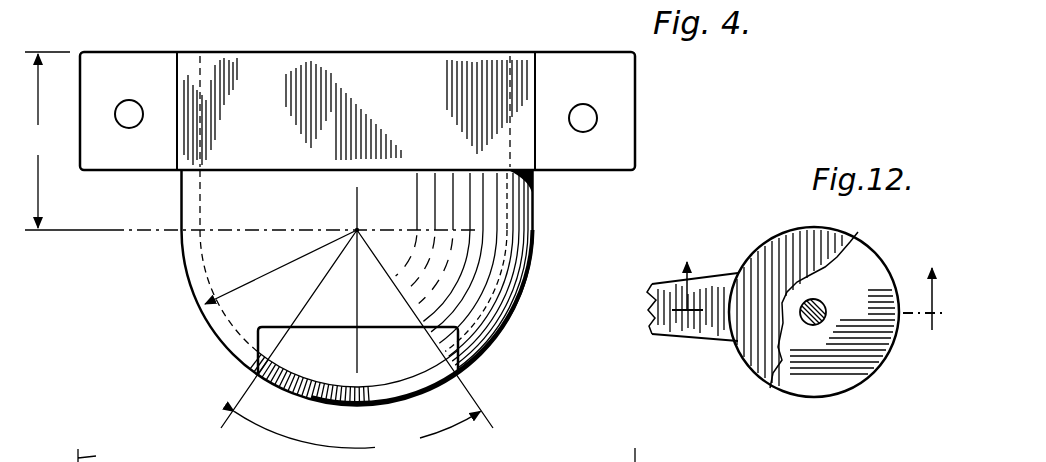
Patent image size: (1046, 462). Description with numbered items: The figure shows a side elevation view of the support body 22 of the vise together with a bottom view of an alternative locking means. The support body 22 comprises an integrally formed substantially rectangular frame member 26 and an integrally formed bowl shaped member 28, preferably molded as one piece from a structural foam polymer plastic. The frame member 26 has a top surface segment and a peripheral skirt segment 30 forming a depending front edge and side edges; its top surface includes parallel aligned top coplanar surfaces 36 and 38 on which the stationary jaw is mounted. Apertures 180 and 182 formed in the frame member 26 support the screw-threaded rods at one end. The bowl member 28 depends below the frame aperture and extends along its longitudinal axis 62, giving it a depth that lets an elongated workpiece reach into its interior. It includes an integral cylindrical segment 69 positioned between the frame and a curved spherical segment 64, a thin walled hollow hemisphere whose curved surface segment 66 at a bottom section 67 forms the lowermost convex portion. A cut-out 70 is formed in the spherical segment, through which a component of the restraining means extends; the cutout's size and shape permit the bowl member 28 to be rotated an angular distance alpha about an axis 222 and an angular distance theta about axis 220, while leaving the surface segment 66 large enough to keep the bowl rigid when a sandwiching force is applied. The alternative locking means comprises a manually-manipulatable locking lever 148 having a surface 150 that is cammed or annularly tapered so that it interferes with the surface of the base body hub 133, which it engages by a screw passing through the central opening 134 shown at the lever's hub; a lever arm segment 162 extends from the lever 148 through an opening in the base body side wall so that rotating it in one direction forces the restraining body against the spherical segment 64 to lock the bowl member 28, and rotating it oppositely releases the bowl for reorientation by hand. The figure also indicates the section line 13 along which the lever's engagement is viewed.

In FIG. 4, the frame member 26 is at (640, 115).
In FIG. 4, the top coplanar surface 38 is at (140, 52).
In FIG. 4, the top coplanar surface 36 is at (572, 52).
In FIG. 4, the aperture 182 is at (152, 78).
In FIG. 4, the aperture 180 is at (612, 88).
In FIG. 4, the peripheral skirt segment 30 is at (410, 101).
In FIG. 4, the cylindrical segment 69 is at (67, 141).
In FIG. 4, the bottom section 67 is at (229, 352).
In FIG. 4, the bowl shaped member 28 is at (533, 290).
In FIG. 4, the curved surface segment 66 is at (493, 342).
In FIG. 4, the cut-out 70 is at (320, 327).
In FIG. 4, the axis 222 is at (243, 228).
In FIG. 4, the axis 220 is at (357, 230).
In FIG. 4, the curved spherical segment 64 is at (283, 268).
In FIG. 4, the longitudinal axis 62 is at (360, 353).
In FIG. 4, the support body 22 is at (356, 455).
In FIG. 12, the base body hub 133 is at (869, 373).
In FIG. 12, the surface 150 is at (787, 238).
In FIG. 12, the locking lever 148 is at (758, 373).
In FIG. 12, the pivot hole 134 is at (815, 298).
In FIG. 12, the lever arm segment 162 is at (697, 340).
In FIG. 12, the section line 13- 13 is at (808, 281).